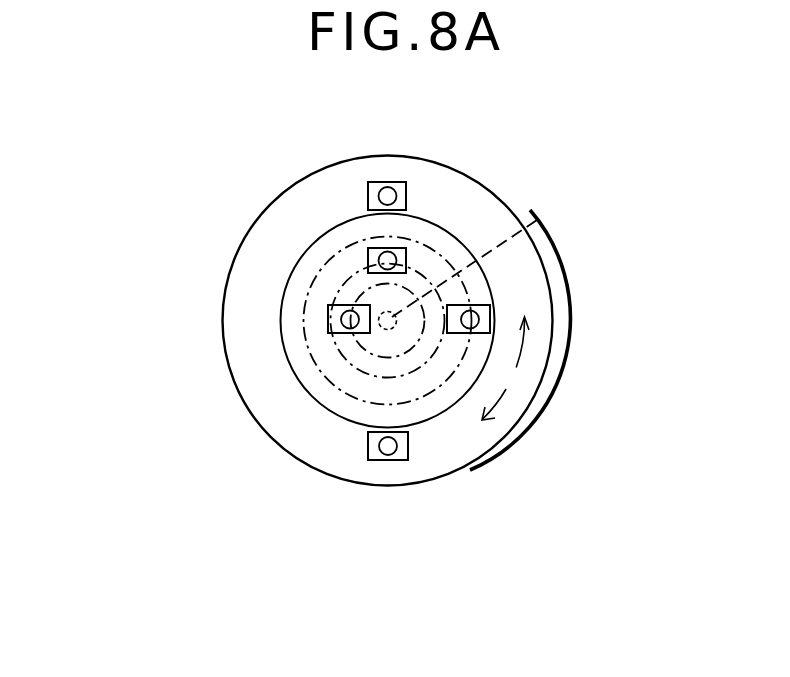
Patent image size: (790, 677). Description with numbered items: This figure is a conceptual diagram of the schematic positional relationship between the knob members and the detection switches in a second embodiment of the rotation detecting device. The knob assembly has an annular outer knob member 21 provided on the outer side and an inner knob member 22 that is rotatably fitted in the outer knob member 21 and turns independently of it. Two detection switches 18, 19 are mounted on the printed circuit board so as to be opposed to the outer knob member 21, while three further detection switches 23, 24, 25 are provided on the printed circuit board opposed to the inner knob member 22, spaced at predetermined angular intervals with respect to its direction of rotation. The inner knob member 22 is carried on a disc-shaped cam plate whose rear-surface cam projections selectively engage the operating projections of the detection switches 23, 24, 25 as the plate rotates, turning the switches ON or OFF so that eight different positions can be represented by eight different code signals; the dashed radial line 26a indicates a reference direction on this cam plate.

The detection switch 18 is at (403, 450).
The detection switch 19 is at (400, 183).
The outer knob member 21 is at (503, 428).
The inner knob member 22 is at (290, 287).
The detection switch 23 is at (328, 320).
The detection switch 24 is at (490, 305).
The detection switch 25 is at (376, 259).
The reference line 26a is at (541, 218).